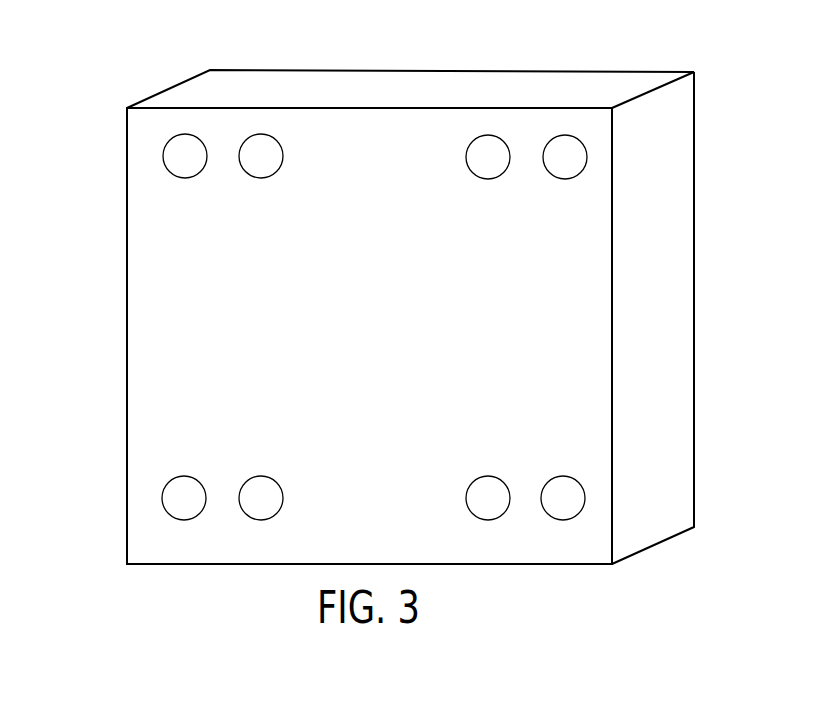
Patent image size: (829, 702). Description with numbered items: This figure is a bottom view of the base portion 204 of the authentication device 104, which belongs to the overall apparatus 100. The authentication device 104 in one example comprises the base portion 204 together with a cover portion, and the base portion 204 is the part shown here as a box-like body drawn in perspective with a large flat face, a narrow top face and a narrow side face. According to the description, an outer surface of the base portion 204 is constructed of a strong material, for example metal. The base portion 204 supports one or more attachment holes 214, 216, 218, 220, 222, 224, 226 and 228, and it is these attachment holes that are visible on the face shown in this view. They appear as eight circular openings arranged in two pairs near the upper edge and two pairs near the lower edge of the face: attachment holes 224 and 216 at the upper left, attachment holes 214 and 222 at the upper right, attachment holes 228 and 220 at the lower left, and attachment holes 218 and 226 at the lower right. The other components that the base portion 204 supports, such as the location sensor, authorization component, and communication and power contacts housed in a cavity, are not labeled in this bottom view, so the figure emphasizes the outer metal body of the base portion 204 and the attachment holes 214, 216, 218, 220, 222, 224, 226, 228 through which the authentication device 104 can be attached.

The enclosure 100 is at (622, 53).
The authentication device 104 is at (92, 235).
The base portion 204 is at (694, 200).
The attachment hole 214 is at (488, 179).
The attachment hole 216 is at (261, 178).
The attachment hole 218 is at (488, 476).
The attachment hole 220 is at (261, 476).
The attachment hole 222 is at (565, 179).
The attachment hole 224 is at (185, 178).
The attachment hole 226 is at (563, 476).
The attachment hole 228 is at (184, 476).